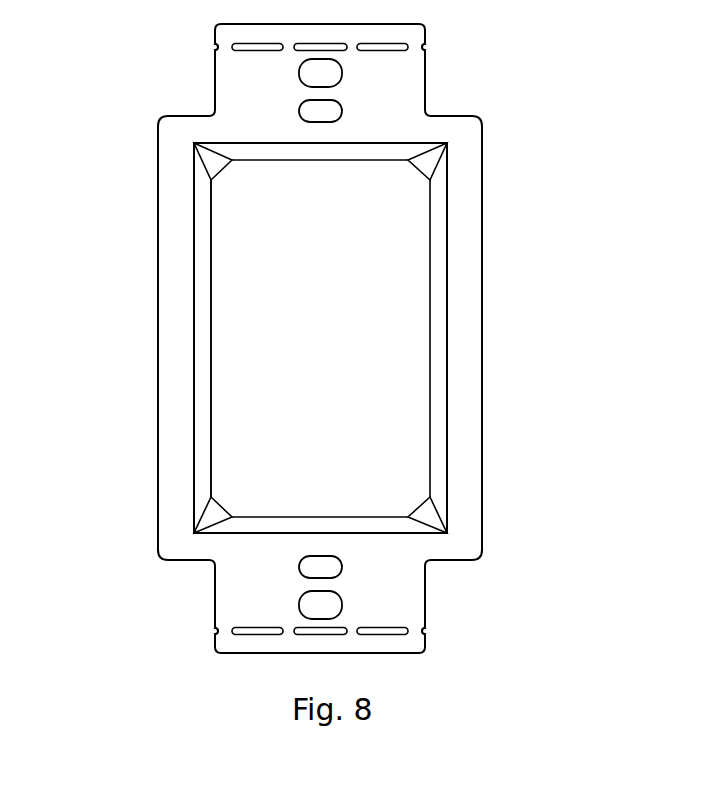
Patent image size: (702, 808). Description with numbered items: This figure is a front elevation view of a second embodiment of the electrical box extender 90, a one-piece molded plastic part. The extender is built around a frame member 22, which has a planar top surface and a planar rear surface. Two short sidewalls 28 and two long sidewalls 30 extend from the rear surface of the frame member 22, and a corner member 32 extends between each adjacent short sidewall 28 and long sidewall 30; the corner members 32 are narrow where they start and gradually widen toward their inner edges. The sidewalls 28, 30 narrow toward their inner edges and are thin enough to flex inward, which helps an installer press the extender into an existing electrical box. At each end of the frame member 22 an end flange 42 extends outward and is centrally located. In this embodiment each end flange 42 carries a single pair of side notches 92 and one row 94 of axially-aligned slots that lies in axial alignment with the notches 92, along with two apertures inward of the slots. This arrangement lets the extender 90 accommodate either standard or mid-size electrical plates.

The electrical box extender 90 is at (96, 113).
The frame member 22 is at (482, 178).
The short sidewalls 28 is at (318, 152).
The long sidewalls 30 is at (202, 342).
The corner member 32 is at (216, 508).
The end flange 42 is at (270, 102).
The side notches 92 is at (427, 47).
The row of axially-aligned slots 94 is at (383, 48).